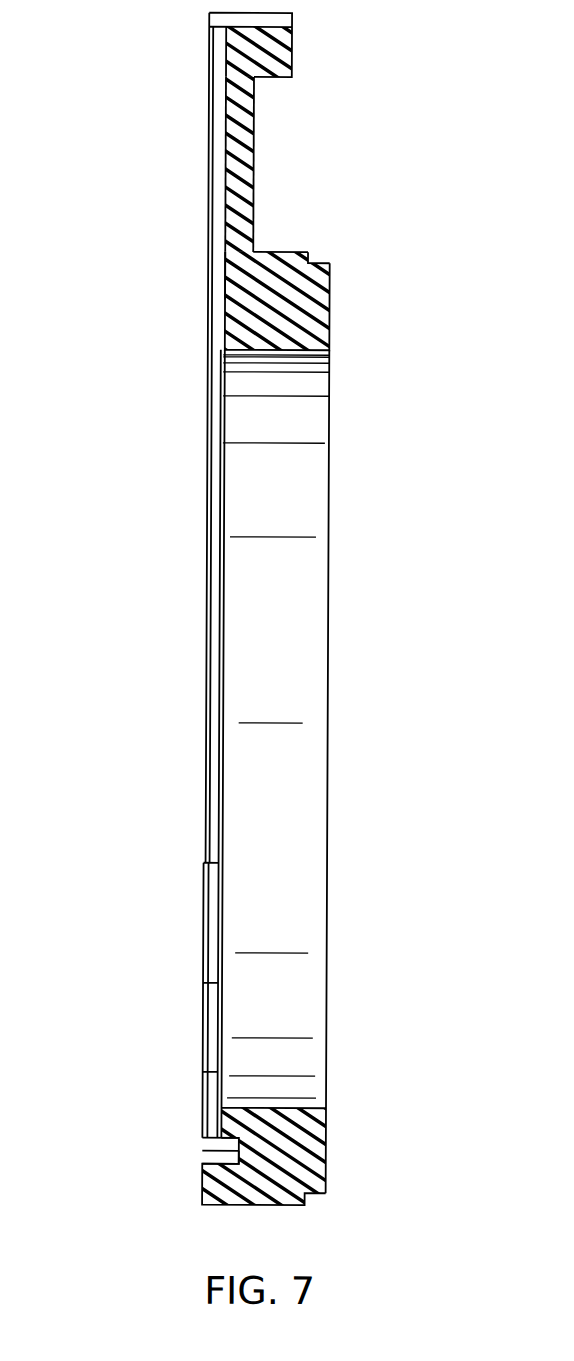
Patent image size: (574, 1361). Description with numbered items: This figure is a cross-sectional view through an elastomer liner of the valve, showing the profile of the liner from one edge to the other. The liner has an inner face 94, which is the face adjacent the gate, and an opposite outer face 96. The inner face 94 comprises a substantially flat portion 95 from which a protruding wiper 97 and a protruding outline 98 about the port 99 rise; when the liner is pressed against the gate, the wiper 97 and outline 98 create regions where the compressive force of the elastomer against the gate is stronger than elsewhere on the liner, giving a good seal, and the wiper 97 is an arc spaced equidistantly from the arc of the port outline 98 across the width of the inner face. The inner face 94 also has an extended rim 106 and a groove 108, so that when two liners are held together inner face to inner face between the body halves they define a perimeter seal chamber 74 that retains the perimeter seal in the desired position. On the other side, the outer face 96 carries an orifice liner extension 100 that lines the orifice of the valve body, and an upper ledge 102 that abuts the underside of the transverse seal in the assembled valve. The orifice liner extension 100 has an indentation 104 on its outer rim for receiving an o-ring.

The perimeter seal chamber 74 is at (209, 1132).
The inner face 94 is at (212, 165).
The substantially flat portion 95 is at (225, 112).
The outer face 96 is at (261, 153).
The protruding wiper 97 is at (222, 272).
The protruding outline 98 is at (222, 340).
The port 99 is at (198, 622).
The orifice liner extension 100 is at (338, 288).
The upper ledge 102 is at (290, 44).
The indentation 104 is at (314, 262).
The extended rim 106 is at (206, 805).
The groove 108 is at (217, 1150).